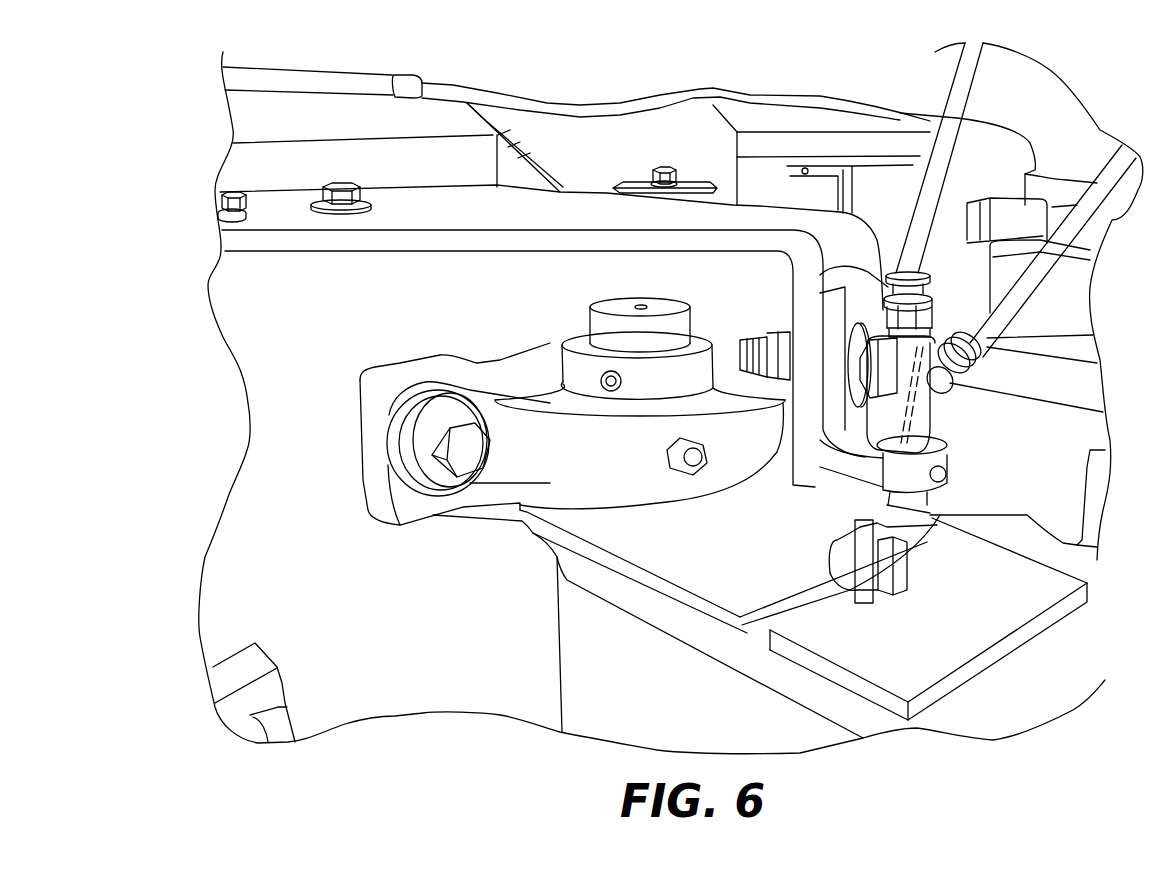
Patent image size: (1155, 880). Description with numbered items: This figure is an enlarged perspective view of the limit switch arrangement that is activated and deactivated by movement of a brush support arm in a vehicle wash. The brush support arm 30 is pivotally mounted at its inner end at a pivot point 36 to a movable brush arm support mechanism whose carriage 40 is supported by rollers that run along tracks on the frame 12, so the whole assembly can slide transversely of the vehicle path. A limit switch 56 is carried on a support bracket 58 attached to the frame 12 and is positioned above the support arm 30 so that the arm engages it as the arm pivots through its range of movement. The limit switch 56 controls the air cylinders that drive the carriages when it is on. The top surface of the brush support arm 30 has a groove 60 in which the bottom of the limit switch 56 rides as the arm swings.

The frame 12 is at (756, 122).
The brush support arm 30 is at (580, 657).
The pivot point 36 is at (597, 302).
The carriage 40 is at (263, 478).
The limit switch 56 is at (930, 413).
The support bracket 58 is at (777, 240).
The groove 60 is at (757, 627).